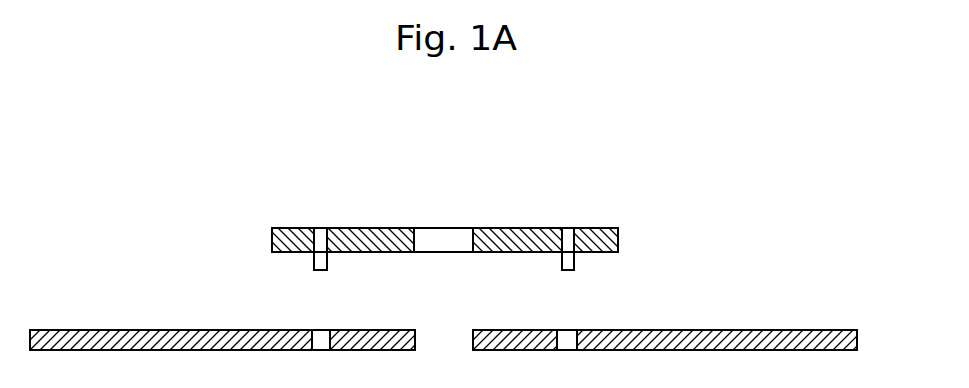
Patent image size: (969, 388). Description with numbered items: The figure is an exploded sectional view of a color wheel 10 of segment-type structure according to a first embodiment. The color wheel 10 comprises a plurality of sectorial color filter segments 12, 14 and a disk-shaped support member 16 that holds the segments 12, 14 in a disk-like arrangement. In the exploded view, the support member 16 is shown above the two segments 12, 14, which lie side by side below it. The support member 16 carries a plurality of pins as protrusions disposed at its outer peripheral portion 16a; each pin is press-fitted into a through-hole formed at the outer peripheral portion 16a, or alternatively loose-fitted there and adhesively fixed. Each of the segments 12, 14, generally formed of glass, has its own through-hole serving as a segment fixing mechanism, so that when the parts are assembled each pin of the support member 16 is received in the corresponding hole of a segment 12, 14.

The color wheel 10 is at (753, 162).
The sectorial color filter segment 12 is at (222, 289).
The sectorial color filter segment 14 is at (665, 295).
The support member 16 is at (485, 222).
The outer peripheral portion 16a is at (603, 228).